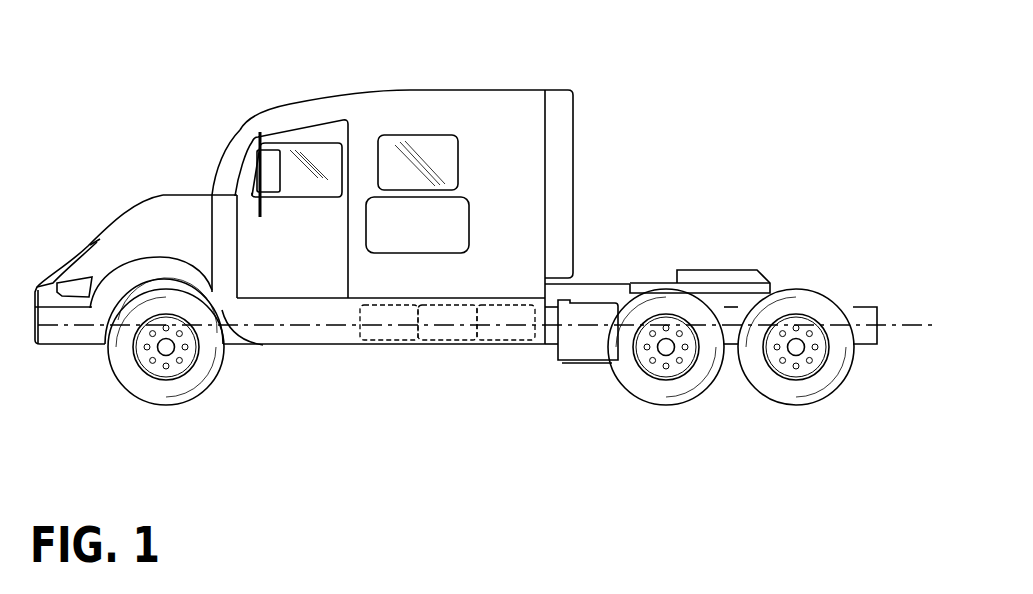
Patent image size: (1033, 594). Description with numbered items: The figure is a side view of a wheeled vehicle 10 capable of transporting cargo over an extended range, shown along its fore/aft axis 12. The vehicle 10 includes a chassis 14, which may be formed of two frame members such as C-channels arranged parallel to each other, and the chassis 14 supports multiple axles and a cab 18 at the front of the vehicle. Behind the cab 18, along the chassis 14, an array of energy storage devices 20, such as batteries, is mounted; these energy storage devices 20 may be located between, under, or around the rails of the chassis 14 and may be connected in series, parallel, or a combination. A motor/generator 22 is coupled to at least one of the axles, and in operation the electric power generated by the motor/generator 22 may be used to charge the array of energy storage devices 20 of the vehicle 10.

The wheeled vehicle 10 is at (492, 229).
The fore/aft axis 12 is at (494, 306).
The chassis 14 is at (852, 307).
The cab 18 is at (277, 100).
The array of energy storage devices 20 is at (362, 352).
The motor/generator 22 is at (592, 363).